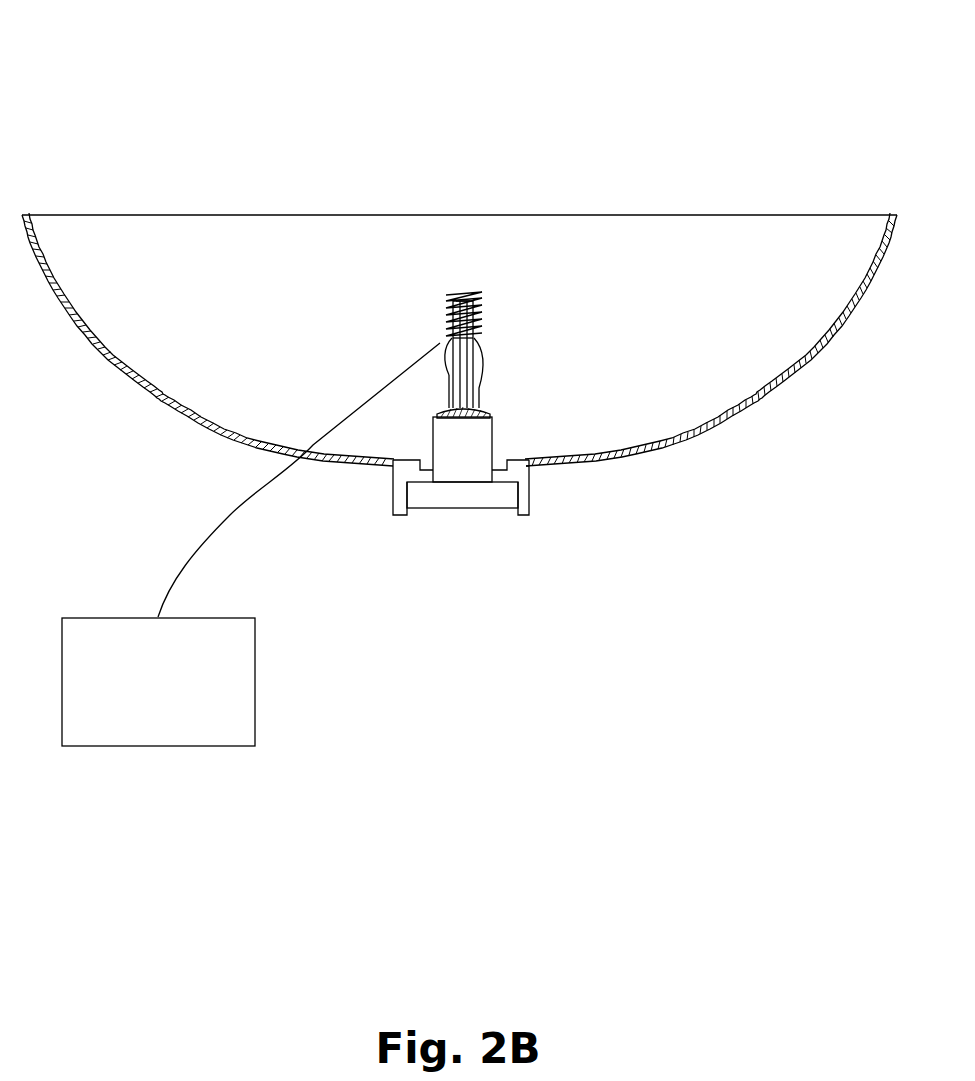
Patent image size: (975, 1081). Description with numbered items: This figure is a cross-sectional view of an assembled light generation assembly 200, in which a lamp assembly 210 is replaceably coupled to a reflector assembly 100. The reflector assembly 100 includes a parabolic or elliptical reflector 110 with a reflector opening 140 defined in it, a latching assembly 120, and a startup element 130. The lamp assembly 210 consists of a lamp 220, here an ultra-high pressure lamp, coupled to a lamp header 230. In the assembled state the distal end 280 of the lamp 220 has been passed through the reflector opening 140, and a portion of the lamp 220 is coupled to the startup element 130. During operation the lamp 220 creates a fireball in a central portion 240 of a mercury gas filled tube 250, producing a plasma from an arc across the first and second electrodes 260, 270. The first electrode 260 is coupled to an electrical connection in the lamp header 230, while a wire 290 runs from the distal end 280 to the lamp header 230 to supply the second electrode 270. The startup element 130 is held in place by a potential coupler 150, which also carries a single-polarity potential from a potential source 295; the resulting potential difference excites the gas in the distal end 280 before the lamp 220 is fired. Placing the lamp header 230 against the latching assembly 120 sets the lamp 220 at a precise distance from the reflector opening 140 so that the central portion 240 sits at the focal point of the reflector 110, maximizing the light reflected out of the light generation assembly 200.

The reflector assembly 100 is at (135, 158).
The reflector 110 is at (170, 401).
The latching assembly 120 is at (531, 515).
The startup element 130 is at (455, 293).
The reflector opening 140 is at (434, 523).
The potential coupler 150 is at (353, 415).
The light generation assembly 200 is at (488, 62).
The lamp assembly 210 is at (592, 357).
The lamp 220 is at (430, 343).
The lamp header 230 is at (462, 495).
The central portion 240 is at (443, 390).
The mercury gas filled tube 250 is at (445, 360).
The first electrode 260 is at (473, 418).
The second electrode 270 is at (464, 300).
The distal end 280 is at (450, 310).
The wire 290 is at (484, 398).
The potential source 295 is at (138, 722).